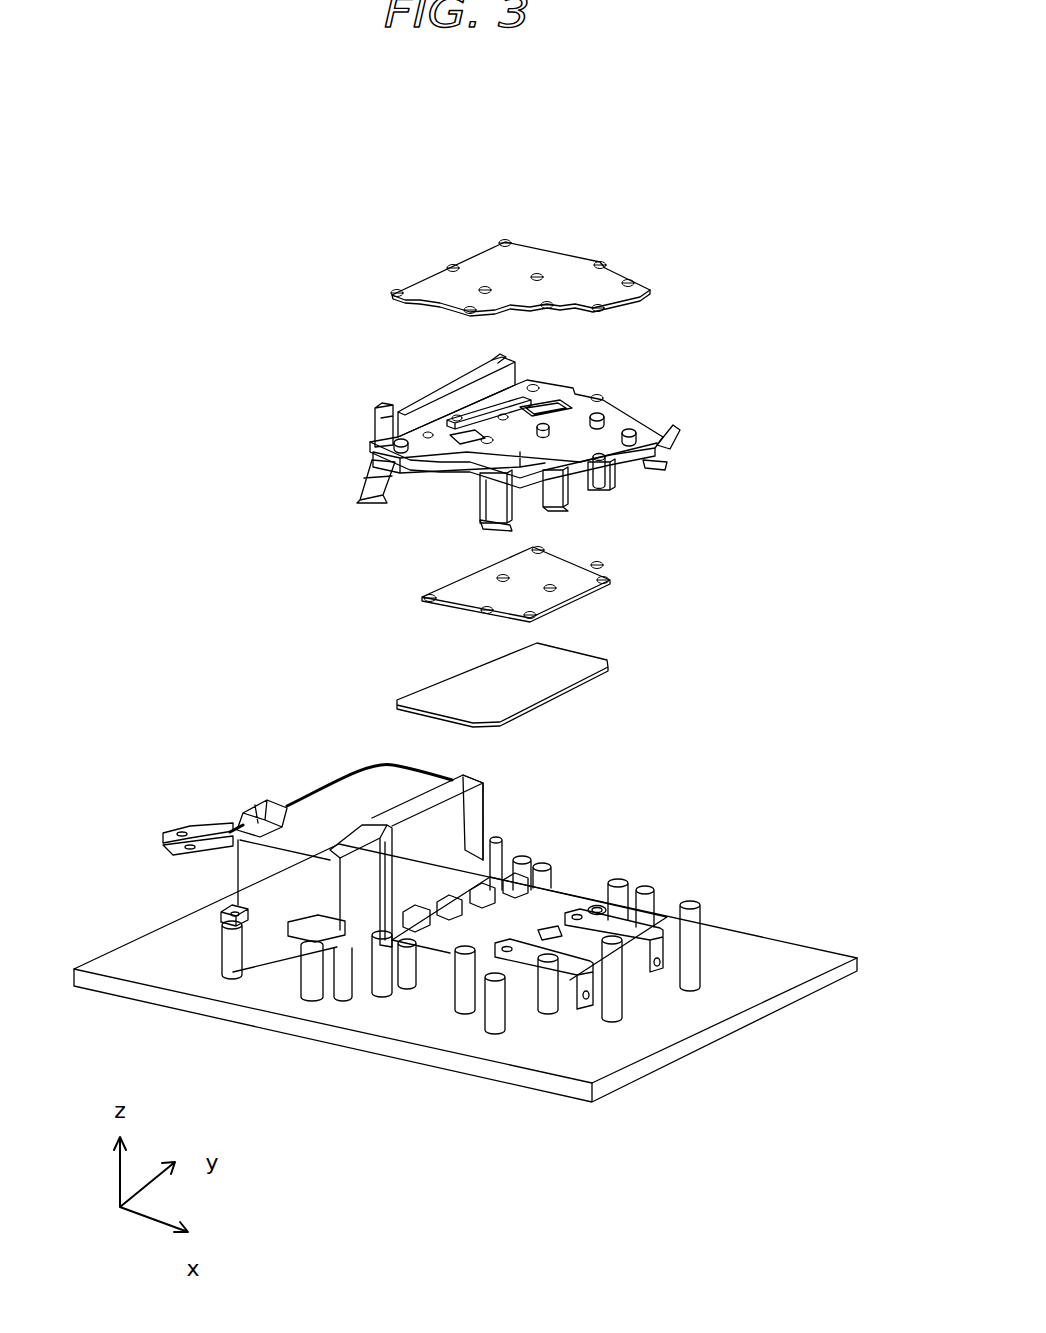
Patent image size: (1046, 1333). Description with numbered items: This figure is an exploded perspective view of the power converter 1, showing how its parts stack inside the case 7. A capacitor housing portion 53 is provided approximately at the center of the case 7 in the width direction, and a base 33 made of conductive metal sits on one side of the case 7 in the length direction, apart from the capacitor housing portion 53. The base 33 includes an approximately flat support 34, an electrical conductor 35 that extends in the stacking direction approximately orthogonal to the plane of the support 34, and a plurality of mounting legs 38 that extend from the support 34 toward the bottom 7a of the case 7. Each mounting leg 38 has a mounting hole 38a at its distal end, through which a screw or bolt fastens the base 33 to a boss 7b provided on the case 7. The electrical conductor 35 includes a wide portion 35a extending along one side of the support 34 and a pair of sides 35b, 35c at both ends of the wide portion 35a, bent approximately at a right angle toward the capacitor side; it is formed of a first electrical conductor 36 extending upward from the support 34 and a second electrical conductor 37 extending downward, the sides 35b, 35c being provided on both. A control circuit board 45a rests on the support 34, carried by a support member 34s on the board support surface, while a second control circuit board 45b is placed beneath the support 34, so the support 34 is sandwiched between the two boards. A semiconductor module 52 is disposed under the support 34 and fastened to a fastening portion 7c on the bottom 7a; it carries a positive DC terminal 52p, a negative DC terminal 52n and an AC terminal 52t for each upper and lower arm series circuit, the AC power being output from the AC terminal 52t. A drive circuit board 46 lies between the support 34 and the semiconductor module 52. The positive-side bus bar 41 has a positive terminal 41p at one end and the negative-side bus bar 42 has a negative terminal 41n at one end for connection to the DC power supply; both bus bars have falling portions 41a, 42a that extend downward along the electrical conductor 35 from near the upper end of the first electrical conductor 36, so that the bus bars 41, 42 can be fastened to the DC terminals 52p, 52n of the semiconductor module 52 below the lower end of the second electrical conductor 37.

The power storage device 1 is at (446, 124).
The control circuit board 45a is at (573, 267).
The electrical conductor 35 is at (252, 457).
The first electrical conductor 36 is at (417, 407).
The second electrical conductor 37 is at (402, 468).
The wide portion 35a is at (447, 397).
The side 35b is at (508, 358).
The side 35c is at (376, 418).
The support 34 is at (595, 428).
The support member 34s is at (636, 432).
The base 33 is at (655, 456).
The mounting leg 38 is at (492, 483).
The mounting hole 38a is at (468, 533).
The control circuit board 45b is at (567, 577).
The drive circuit board 46 is at (537, 657).
The positive-side bus bar 41 is at (423, 803).
The falling portion 41a is at (470, 832).
The negative-side bus bar 42 is at (347, 843).
The falling portion 42a is at (383, 962).
The positive terminal 41p is at (188, 832).
The negative terminal 41n is at (165, 843).
The capacitor housing portion 53 is at (257, 867).
The semiconductor module 52 is at (557, 902).
The positive DC terminal 52p is at (490, 885).
The negative DC terminal 52n is at (527, 886).
The AC terminal 52t is at (512, 953).
The case 7 is at (465, 977).
The bottom 7a is at (712, 1005).
The boss 7b is at (392, 930).
The fastening portion 7c is at (548, 967).